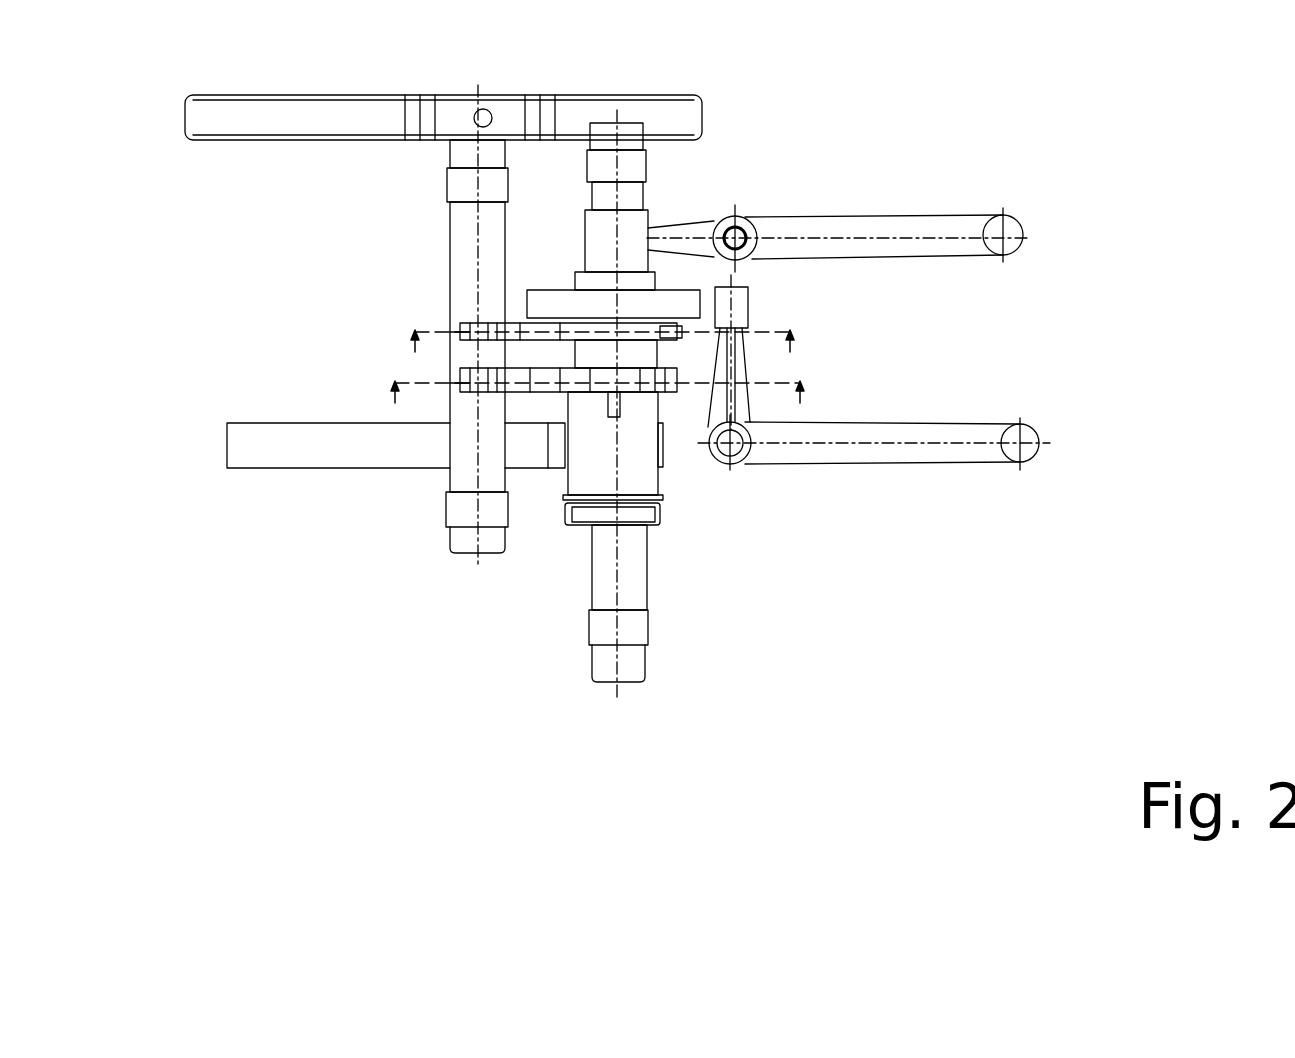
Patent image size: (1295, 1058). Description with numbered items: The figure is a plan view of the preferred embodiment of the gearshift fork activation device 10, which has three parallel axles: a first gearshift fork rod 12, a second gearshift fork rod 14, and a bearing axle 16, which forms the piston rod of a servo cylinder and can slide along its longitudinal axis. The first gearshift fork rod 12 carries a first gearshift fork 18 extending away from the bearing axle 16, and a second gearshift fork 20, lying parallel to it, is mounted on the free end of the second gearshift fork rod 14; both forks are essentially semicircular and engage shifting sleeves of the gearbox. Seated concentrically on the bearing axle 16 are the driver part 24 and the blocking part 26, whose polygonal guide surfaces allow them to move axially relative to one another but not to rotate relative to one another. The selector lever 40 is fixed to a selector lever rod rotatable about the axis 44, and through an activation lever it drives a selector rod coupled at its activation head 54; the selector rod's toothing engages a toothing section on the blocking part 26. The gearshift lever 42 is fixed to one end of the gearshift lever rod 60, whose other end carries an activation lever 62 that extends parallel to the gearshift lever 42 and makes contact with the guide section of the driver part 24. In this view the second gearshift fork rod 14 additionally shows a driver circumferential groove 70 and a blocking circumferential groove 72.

The gearshift fork activation device 10 is at (66, 146).
The first gearshift fork rod 12 is at (618, 592).
The second gearshift fork rod 14 is at (473, 540).
The bearing axle 16 is at (646, 168).
The first gearshift fork 18 is at (288, 468).
The second gearshift fork 20 is at (703, 110).
The driver part 24 is at (530, 390).
The blocking part 26 is at (540, 340).
The selector lever 40 is at (1015, 468).
The gearshift lever 42 is at (1003, 250).
The axis 44 is at (733, 445).
The activation head 54 is at (748, 297).
The gearshift lever rod 60 is at (838, 225).
The activation lever 62 is at (650, 230).
The driver circumferential groove 70 is at (455, 383).
The blocking circumferential groove 72 is at (452, 338).